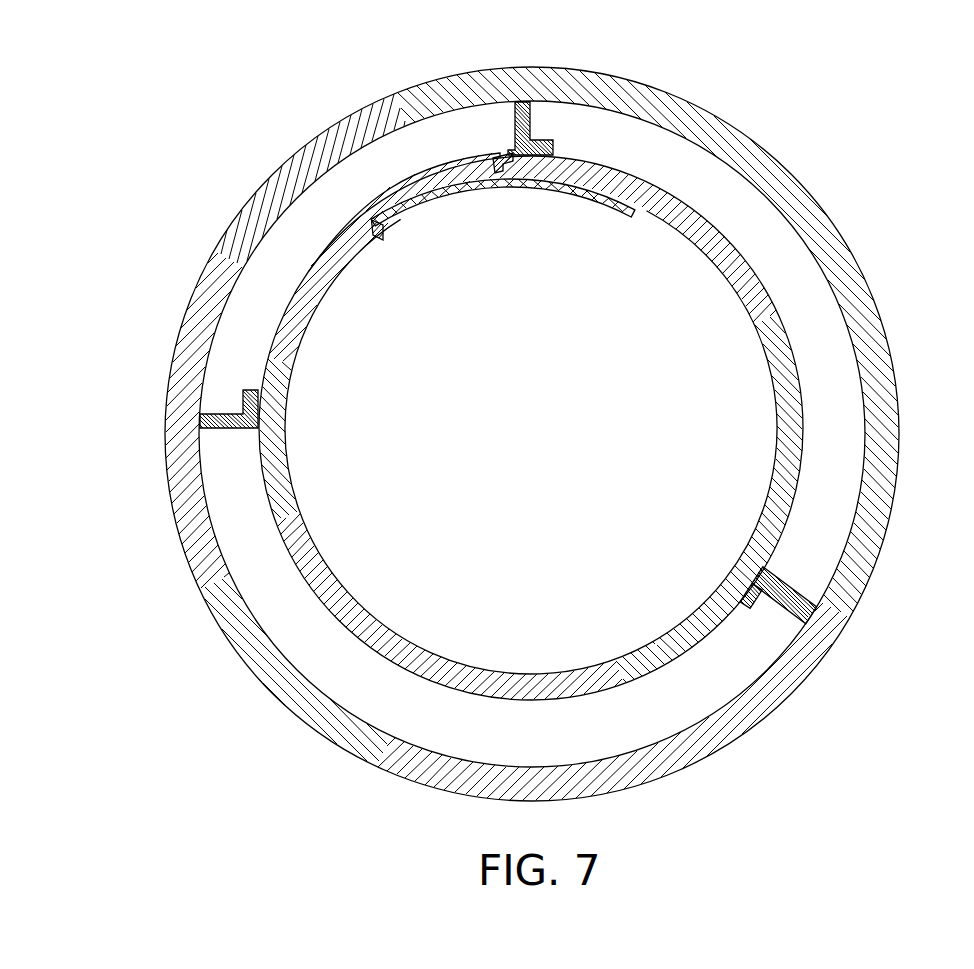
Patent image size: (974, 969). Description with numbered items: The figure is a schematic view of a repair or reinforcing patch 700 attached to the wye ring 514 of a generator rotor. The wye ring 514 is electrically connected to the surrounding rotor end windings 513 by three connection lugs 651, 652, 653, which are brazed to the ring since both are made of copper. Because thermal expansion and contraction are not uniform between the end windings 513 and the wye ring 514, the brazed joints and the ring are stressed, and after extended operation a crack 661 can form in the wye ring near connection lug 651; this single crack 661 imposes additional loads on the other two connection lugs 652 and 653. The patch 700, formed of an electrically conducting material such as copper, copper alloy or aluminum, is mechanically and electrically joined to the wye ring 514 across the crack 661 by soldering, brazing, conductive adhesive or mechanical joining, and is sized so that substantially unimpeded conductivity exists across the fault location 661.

The rotor end windings 513 is at (812, 205).
The wye ring 514 is at (362, 600).
The repair patch 700 is at (545, 186).
The connection lug 651 is at (528, 100).
The connection lug 652 is at (802, 588).
The connection lug 653 is at (233, 430).
The crack 661 is at (503, 150).